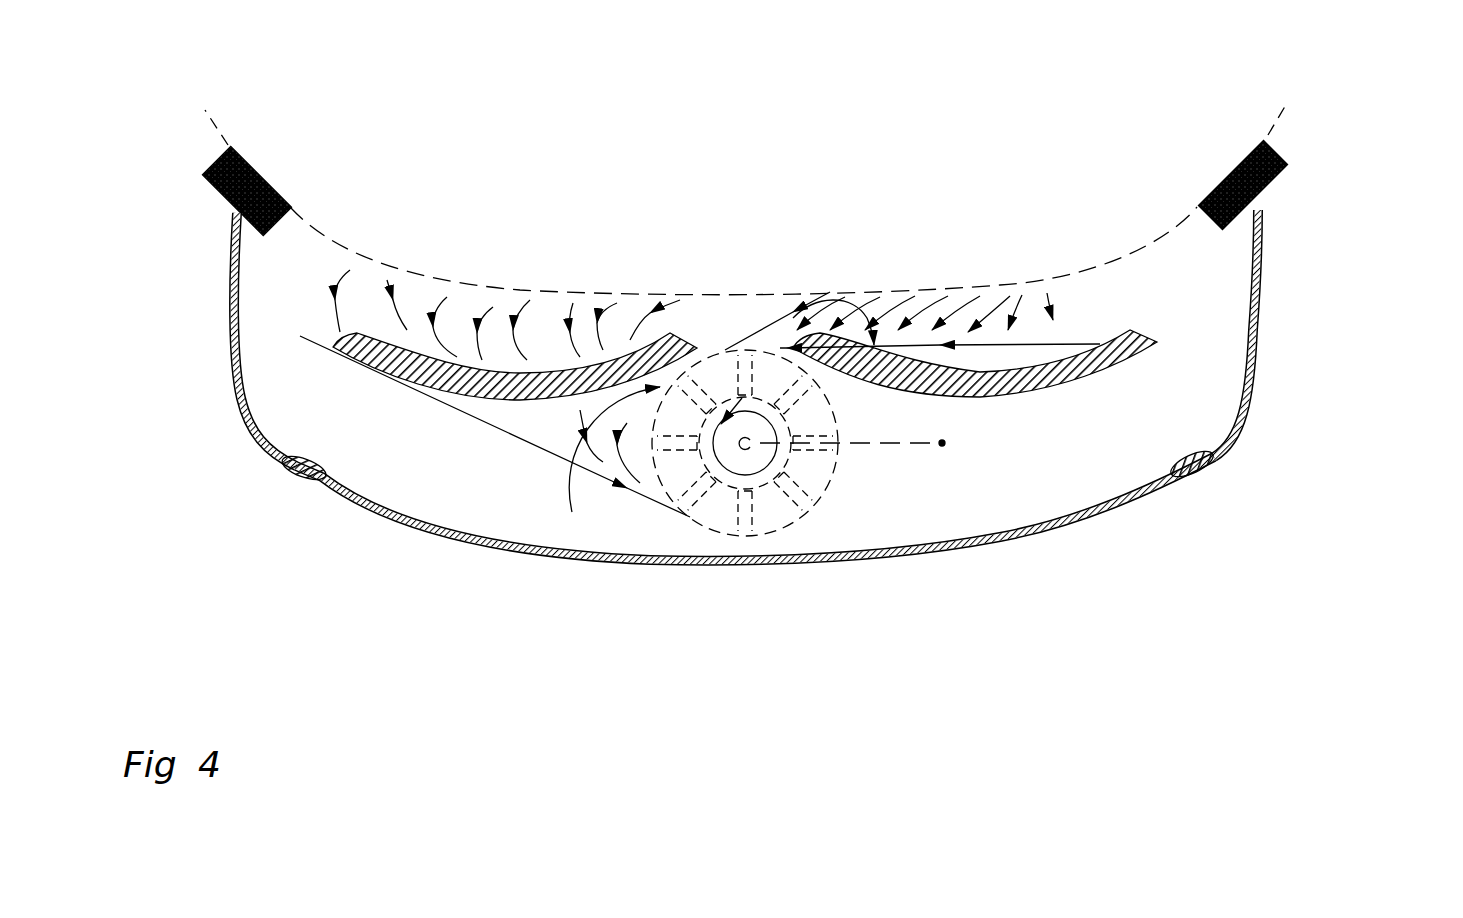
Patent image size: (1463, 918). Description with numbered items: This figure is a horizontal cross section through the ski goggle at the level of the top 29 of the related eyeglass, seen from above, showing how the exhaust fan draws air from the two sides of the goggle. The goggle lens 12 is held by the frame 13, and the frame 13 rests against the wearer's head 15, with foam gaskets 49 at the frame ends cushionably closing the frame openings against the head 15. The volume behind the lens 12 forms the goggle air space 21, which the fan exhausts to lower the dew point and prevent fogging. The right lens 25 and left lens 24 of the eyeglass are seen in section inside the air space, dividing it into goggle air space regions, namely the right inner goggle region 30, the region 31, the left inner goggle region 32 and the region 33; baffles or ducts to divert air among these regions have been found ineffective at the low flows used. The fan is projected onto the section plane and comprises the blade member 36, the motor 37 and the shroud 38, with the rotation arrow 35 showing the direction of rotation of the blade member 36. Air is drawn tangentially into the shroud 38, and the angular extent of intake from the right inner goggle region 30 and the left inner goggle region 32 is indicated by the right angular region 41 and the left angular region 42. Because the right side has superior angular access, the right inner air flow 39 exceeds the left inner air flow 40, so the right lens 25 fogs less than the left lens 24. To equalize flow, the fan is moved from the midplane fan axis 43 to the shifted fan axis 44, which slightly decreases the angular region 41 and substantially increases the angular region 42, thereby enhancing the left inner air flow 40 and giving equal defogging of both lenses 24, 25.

The lens 12 is at (755, 572).
The frame 13 is at (757, 338).
The head 15 is at (743, 217).
The goggle air space 21 is at (808, 513).
The left lens 24 is at (1081, 391).
The right lens 25 is at (515, 291).
The top of eyeglass 29 is at (919, 243).
The right inner goggle region 30 is at (507, 315).
The goggle air space region 31 is at (392, 441).
The left inner goggle region 32 is at (1158, 301).
The goggle air space region 33 is at (1138, 411).
The rotation arrow 35 is at (850, 526).
The blade member 36 is at (873, 609).
The motor 37 is at (699, 496).
The shroud 38 is at (903, 512).
The right inner air flow 39 is at (817, 158).
The left inner air flow 40 is at (1048, 411).
The right angular region 41 is at (497, 488).
The left angular region 42 is at (912, 291).
The midplane fan axis 43 is at (594, 520).
The shifted fan axis 44 is at (962, 531).
The foam gasket 49 is at (827, 164).